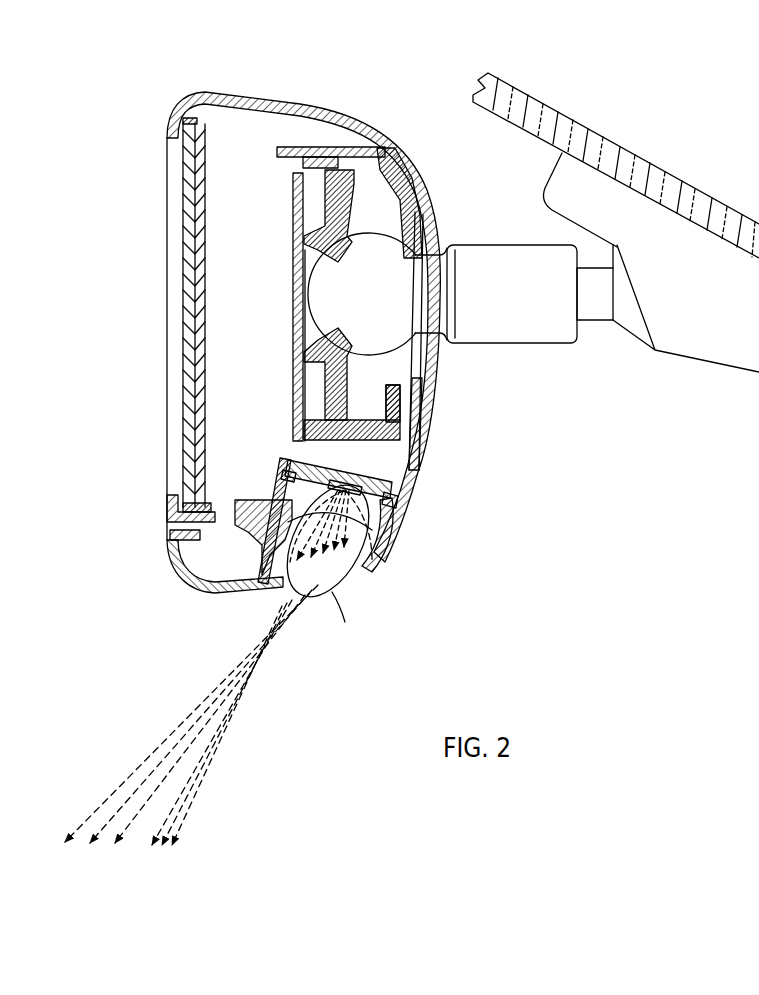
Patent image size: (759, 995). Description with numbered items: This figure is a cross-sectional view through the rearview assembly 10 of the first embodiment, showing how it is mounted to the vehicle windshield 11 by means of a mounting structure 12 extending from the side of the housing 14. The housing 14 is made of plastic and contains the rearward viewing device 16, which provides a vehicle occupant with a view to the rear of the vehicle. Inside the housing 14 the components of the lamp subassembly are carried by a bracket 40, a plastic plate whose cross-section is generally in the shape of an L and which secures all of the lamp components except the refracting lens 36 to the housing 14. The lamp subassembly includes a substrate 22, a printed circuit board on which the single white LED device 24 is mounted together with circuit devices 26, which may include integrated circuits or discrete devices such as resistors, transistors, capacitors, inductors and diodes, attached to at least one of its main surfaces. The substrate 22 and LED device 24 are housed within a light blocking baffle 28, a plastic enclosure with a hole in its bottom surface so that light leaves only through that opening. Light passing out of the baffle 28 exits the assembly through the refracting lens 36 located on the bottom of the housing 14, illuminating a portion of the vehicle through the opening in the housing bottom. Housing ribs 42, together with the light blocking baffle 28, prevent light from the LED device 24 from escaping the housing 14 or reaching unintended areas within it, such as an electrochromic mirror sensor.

The rearview assembly 10 is at (143, 108).
The windshield 11 is at (566, 120).
The mounting structure 12 is at (442, 392).
The housing 14 is at (318, 114).
The rearward viewing device 16 is at (183, 172).
The substrate 22 is at (298, 456).
The single white LED device 24 is at (390, 484).
The circuit devices 26 is at (290, 472).
The light blocking baffle 28 is at (240, 510).
The refracting lens 36 is at (372, 570).
The bracket 40 is at (294, 206).
The housing ribs 42 is at (426, 456).